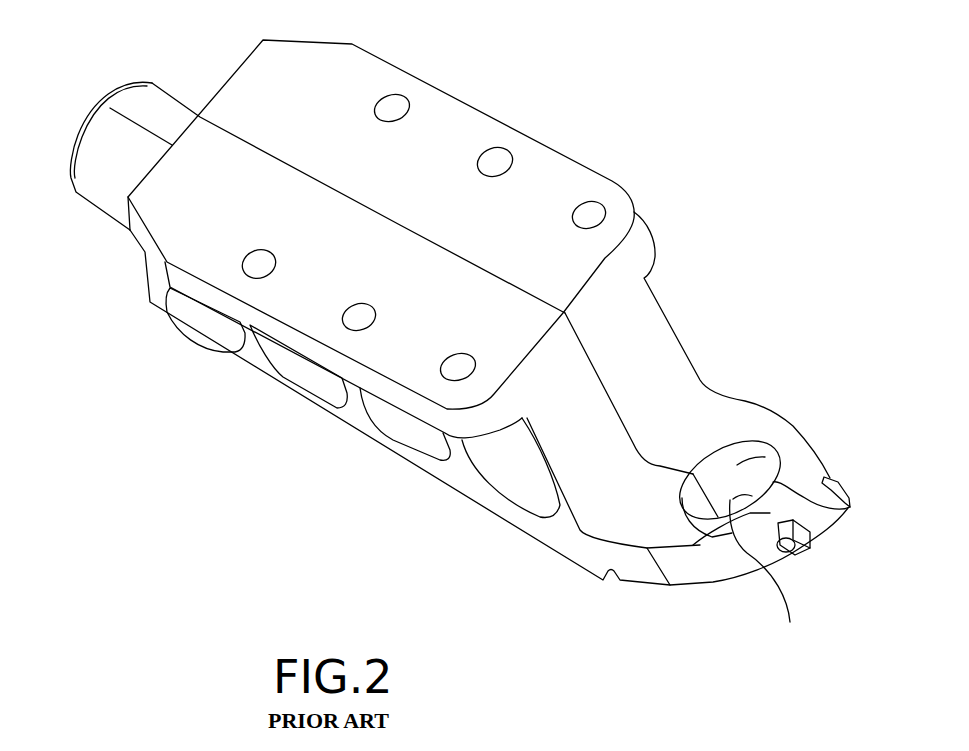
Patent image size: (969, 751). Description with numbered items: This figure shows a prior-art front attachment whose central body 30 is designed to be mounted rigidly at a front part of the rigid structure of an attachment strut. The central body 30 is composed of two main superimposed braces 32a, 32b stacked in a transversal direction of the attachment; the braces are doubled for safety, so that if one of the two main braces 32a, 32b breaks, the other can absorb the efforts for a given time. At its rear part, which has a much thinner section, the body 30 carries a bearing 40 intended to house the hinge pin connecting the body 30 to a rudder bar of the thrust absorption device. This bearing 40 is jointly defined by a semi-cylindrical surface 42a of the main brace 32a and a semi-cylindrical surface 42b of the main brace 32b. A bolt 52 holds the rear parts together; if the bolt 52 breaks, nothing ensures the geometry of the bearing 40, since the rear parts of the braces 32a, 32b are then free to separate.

The central body 30 is at (91, 113).
The main brace 32b is at (452, 117).
The main brace 32a is at (428, 411).
The semi-cylindrical surface 42b is at (793, 425).
The semi-cylindrical surface 42a is at (700, 505).
The bearing 40 is at (793, 586).
The bolt 52 is at (845, 493).